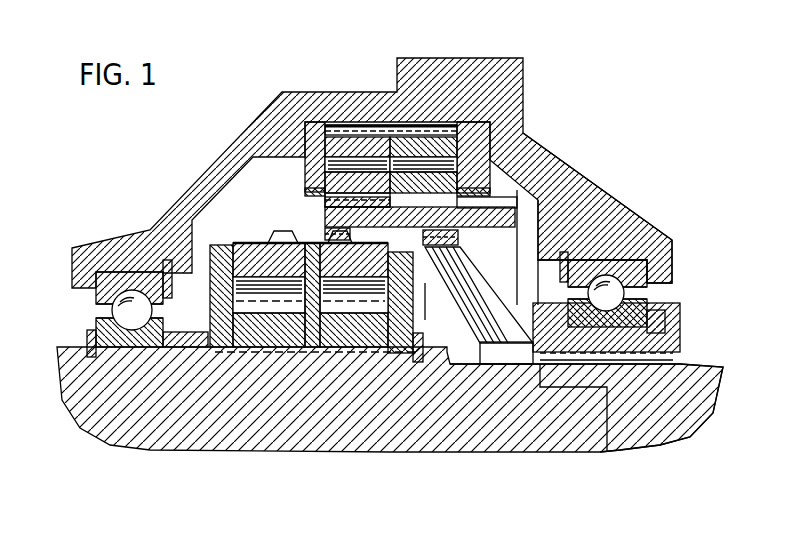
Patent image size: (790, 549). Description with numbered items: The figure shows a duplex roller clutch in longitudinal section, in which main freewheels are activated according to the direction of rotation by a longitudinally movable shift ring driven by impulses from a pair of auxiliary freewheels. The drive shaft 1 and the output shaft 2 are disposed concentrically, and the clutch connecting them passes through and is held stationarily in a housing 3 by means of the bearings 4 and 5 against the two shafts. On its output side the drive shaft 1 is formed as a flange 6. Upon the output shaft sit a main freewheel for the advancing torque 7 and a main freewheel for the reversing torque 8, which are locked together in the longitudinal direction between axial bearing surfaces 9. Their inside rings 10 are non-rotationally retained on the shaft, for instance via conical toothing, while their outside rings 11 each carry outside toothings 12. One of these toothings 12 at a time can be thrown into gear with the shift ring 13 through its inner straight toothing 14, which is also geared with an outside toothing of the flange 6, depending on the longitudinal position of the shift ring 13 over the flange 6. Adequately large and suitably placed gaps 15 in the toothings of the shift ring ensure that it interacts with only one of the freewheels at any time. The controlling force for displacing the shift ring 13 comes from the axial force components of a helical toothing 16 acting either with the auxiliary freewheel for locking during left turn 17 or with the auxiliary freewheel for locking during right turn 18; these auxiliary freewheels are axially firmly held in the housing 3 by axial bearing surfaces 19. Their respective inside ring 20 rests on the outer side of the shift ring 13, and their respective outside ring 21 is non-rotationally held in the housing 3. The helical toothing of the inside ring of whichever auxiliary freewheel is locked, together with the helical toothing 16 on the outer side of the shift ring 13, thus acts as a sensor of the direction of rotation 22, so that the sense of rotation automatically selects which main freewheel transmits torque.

The drive shaft 1 is at (690, 387).
The output shaft 2 is at (83, 392).
The housing 3 is at (283, 130).
The bearing 4 is at (645, 262).
The bearing 5 is at (96, 302).
The flange 6 is at (545, 257).
The main freewheel for the advancing torque 7 is at (267, 303).
The main freewheel for the reversing torque 8 is at (365, 303).
The axial bearing surfaces 9 is at (210, 348).
The inside rings 10 is at (312, 347).
The outside rings 11 is at (280, 238).
The outside toothings 12 is at (323, 230).
The shift ring 13 is at (325, 210).
The inner straight toothing 14 is at (515, 222).
The gaps 15 is at (450, 242).
The helical toothing 16 is at (497, 203).
The auxiliary freewheel for locking during left turn 17 is at (330, 125).
The auxiliary freewheel for locking during right turn 18 is at (432, 122).
The axial bearing surfaces 19 is at (303, 120).
The inside ring 20 is at (368, 168).
The outside ring 21 is at (392, 125).
The sensor of the direction of rotation 22 is at (310, 195).